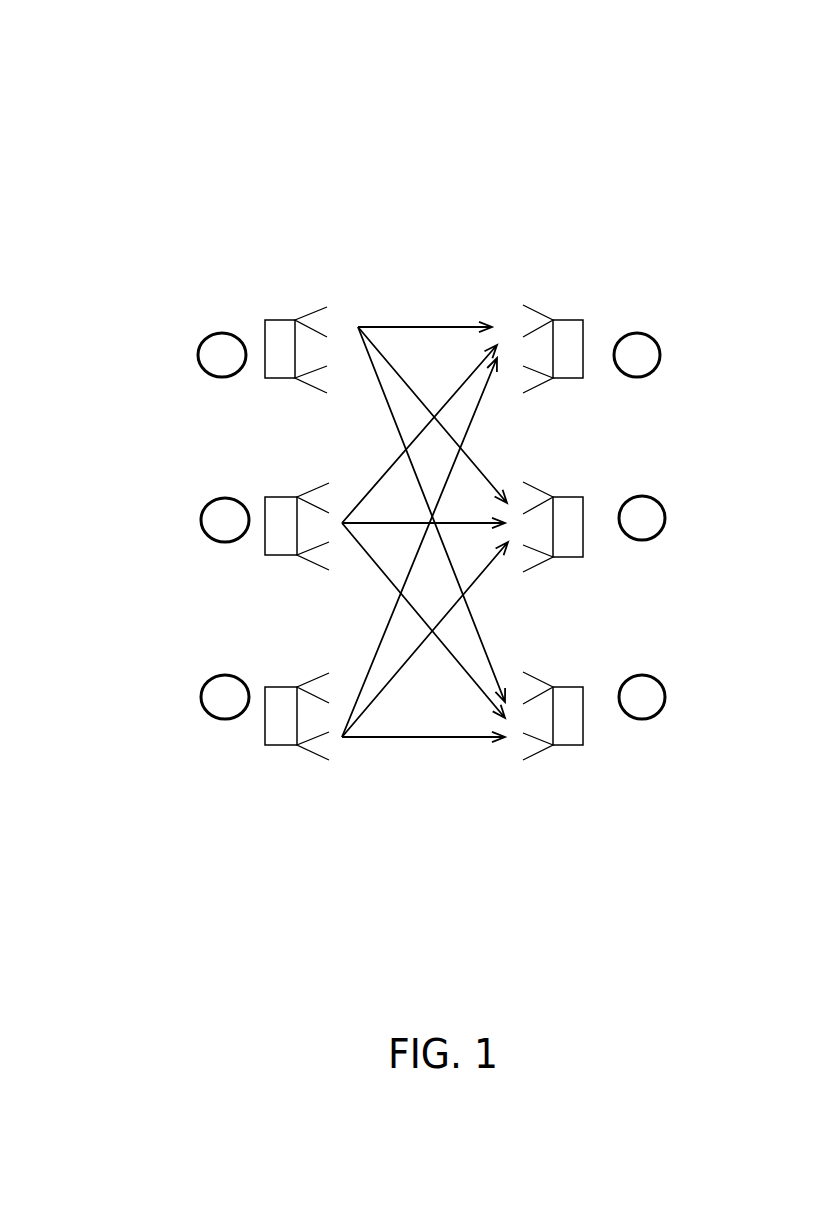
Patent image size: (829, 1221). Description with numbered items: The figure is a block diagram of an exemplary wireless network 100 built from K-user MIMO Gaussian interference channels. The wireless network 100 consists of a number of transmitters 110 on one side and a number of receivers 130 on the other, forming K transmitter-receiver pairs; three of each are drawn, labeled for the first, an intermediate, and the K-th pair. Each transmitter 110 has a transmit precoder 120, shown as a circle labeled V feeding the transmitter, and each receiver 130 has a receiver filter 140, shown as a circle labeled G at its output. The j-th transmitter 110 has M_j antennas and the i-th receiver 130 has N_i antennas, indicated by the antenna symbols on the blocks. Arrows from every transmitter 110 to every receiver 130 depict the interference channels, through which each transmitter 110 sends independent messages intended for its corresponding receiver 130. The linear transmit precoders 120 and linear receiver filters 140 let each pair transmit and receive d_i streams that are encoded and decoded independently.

The wireless network 100 is at (118, 63).
The transmitter 110 is at (280, 320).
The transmit precoder 120 is at (198, 352).
The receiver 130 is at (572, 320).
The receiver filter 140 is at (660, 357).